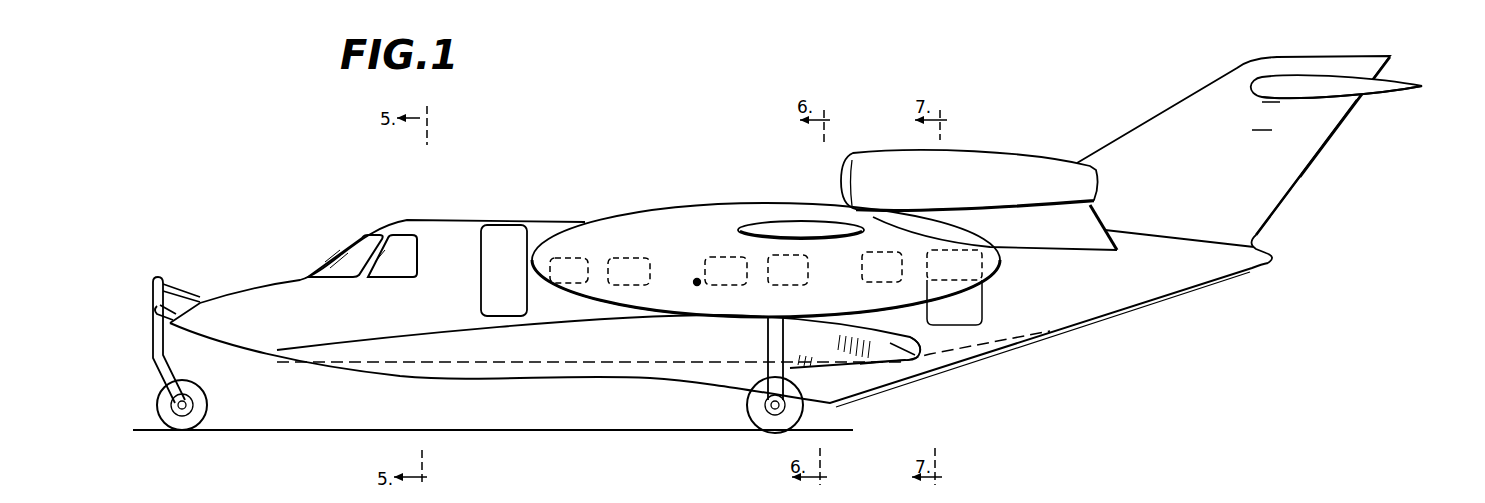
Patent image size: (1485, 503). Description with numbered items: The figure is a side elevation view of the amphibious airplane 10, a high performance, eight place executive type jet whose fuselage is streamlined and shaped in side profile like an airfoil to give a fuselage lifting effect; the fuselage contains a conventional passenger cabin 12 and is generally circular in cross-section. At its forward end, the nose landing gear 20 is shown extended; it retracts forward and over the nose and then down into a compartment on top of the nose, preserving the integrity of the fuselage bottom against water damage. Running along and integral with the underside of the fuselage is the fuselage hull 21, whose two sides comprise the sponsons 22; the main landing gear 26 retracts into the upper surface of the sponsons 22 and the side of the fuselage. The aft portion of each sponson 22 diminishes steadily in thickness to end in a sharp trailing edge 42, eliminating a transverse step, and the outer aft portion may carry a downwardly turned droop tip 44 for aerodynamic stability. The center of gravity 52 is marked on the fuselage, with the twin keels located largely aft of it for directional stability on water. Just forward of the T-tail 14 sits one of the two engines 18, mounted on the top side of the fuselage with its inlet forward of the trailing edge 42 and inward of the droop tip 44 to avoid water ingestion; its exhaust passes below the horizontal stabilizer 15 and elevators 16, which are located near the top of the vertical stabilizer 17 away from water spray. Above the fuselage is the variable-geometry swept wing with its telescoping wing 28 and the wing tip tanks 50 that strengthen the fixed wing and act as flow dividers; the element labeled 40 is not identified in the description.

The amphibious airplane 10 is at (721, 292).
The passenger cabin 12 is at (547, 230).
The T-tail 14 is at (1328, 146).
The horizontal stabilizer 15 is at (1280, 92).
The elevators 16 is at (1380, 92).
The vertical stabilizer 17 is at (1196, 155).
The engines 18 is at (1013, 163).
The nose landing gear 20 is at (158, 378).
The fuselage hull 21 is at (520, 358).
The sponsons 22 is at (892, 345).
The main landing gear 26 is at (747, 412).
The telescoping wing 28 is at (778, 223).
The lower hull sponson 40 is at (897, 335).
The sharp trailing edge 42 is at (920, 350).
The droop tip 44 is at (883, 360).
The wing tip tanks 50 is at (683, 213).
The center of gravity 52 is at (697, 282).